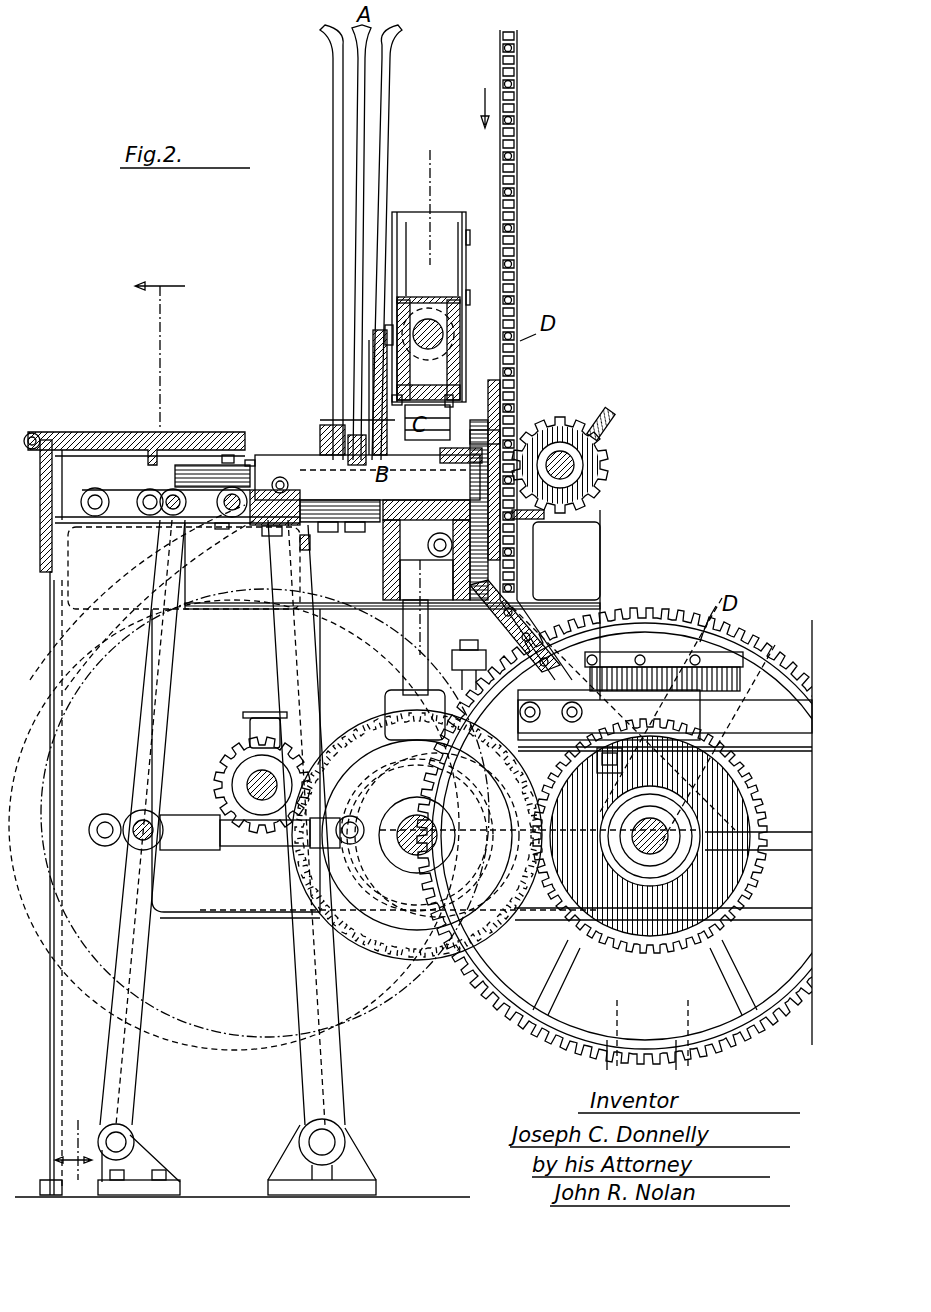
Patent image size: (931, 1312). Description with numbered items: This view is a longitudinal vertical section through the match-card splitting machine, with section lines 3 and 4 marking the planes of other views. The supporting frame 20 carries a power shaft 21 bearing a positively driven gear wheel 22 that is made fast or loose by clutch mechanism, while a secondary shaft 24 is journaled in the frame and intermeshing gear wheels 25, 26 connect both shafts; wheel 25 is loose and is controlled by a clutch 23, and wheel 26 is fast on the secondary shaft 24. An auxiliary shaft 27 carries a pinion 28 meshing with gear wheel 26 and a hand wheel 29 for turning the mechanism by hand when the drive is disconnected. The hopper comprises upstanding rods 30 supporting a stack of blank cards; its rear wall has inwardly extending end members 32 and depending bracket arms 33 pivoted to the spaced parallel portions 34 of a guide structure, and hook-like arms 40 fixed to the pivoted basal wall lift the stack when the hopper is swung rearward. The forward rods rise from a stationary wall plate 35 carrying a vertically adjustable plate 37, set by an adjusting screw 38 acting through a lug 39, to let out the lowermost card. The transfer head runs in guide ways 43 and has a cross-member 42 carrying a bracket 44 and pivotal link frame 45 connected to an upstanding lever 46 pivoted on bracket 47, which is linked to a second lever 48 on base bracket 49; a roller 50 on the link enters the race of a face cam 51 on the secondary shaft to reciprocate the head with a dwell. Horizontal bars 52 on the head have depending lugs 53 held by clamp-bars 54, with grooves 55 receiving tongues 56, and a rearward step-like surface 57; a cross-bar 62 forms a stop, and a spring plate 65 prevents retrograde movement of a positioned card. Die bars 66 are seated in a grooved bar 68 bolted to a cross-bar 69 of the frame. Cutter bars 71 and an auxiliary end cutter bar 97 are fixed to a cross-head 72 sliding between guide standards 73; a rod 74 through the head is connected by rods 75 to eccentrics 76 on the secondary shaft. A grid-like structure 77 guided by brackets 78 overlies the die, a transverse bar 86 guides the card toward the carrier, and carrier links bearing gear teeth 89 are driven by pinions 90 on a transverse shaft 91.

The section line 3 is at (120, 727).
The section line 4 is at (423, 401).
The supporting frame 20 is at (600, 582).
The power shaft 21 is at (625, 836).
The gear wheel 22 is at (506, 1000).
The clutch 23 is at (702, 836).
The secondary shaft 24 is at (416, 814).
The gear wheel 25 is at (682, 845).
The gear wheel 26 is at (442, 966).
The auxiliary shaft 27 is at (262, 785).
The pinion 28 is at (250, 752).
The hand wheel 29 is at (252, 1052).
The upstanding rods 30 is at (365, 96).
The end members 32 is at (340, 507).
The bracket arms 33 is at (270, 527).
The spaced parallel portions 34 is at (213, 465).
The stationary wall plate 35 is at (390, 398).
The vertically adjustable plate 37 is at (375, 370).
The adjusting screw 38 is at (378, 350).
The lug 39 is at (385, 330).
The hook-like arms 40 is at (322, 532).
The cross-member 42 is at (233, 520).
The guide ways 43 is at (222, 530).
The bracket 44 is at (175, 520).
The pivotal link frame 45 is at (183, 490).
The upstanding lever 46 is at (178, 670).
The bracket 47 is at (162, 1168).
The upstanding lever 48 is at (345, 1086).
The base bracket 49 is at (355, 1152).
The roller 50 is at (336, 748).
The face cam 51 is at (355, 435).
The horizontal bars 52 is at (352, 532).
The depending lugs 53 is at (250, 460).
The clamp-bars 54 is at (305, 550).
The grooves 55 is at (364, 477).
The tongues 56 is at (228, 455).
The step-like surface 57 is at (277, 538).
The sectional cross-bar 62 is at (464, 440).
The spring plate 65 is at (320, 440).
The die bars 66 is at (475, 590).
The grooved bar 68 is at (392, 545).
The cross-bar 69 is at (400, 601).
The cutter bars 71 is at (440, 405).
The cross-head 72 is at (432, 259).
The guide standards 73 is at (470, 212).
The rod or shaft 74 is at (445, 330).
The rods 75 is at (406, 650).
The eccentrics 76 is at (386, 750).
The grid-like structure 77 is at (448, 410).
The brackets 78 is at (380, 412).
The transverse bar 86 is at (498, 432).
The gear teeth 89 is at (515, 276).
The pinions 90 is at (606, 463).
The transverse shaft 91 is at (568, 478).
The auxiliary end cutter bar 97 is at (494, 405).